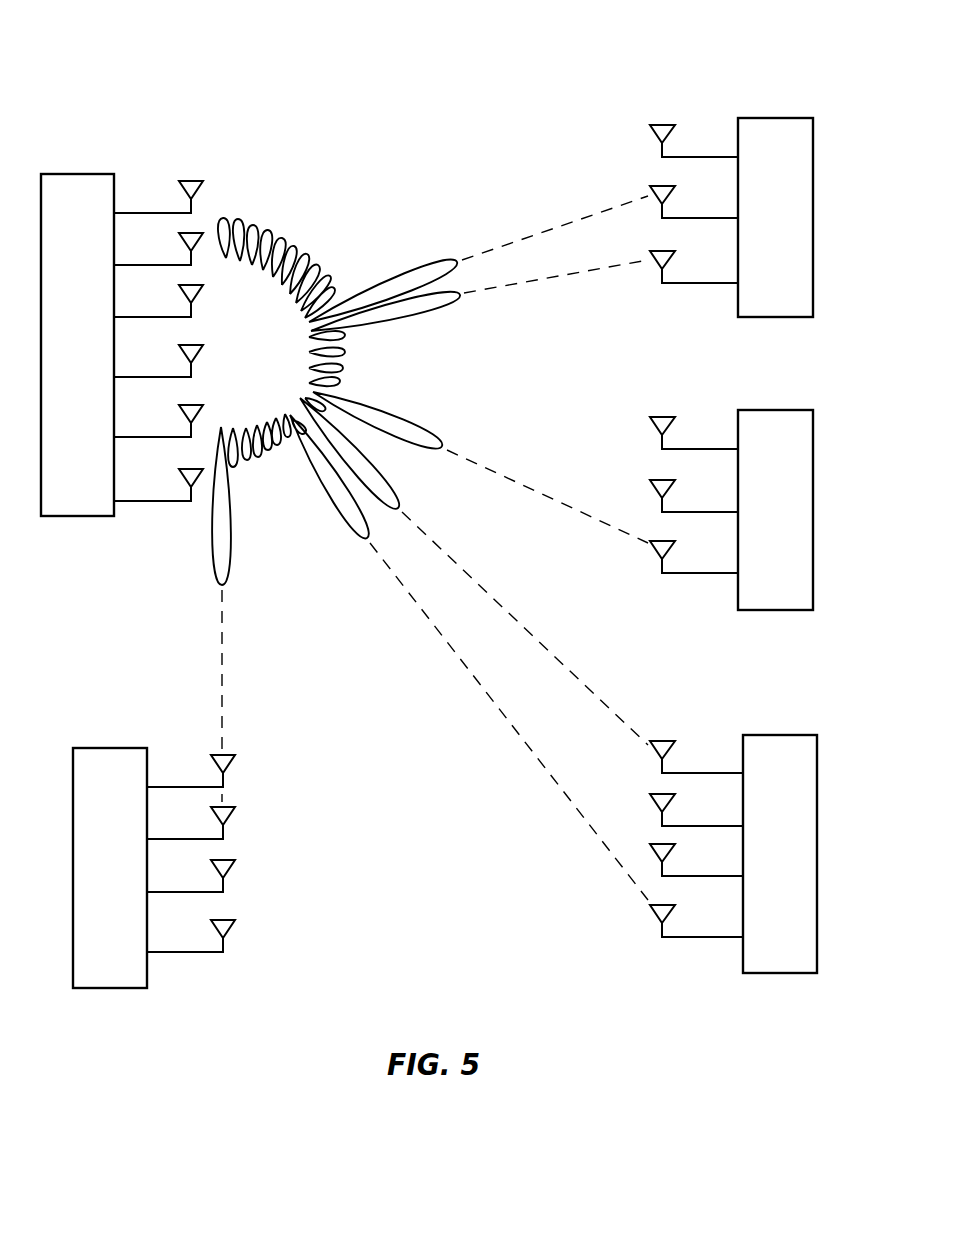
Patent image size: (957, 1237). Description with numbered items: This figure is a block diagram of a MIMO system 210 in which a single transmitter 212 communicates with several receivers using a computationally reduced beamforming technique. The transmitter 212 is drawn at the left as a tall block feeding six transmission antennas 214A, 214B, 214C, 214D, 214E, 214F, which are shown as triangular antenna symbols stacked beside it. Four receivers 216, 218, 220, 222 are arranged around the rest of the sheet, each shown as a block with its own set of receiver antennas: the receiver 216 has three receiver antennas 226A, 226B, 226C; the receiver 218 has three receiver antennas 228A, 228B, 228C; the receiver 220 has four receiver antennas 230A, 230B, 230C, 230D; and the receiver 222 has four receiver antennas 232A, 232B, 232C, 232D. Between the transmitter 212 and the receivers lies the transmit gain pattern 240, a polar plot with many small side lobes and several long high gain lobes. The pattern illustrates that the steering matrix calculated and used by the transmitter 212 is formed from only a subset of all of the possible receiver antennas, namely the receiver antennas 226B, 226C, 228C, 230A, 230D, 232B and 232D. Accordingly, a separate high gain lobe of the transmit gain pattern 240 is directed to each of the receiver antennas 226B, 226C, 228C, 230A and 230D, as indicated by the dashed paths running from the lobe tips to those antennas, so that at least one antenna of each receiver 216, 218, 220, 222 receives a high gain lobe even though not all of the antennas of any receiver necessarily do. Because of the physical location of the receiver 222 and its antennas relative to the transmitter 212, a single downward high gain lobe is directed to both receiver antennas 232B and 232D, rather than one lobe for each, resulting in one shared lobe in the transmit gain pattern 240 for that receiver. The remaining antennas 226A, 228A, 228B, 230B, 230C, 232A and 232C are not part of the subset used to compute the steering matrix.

The MIMO system 210 is at (227, 60).
The transmitter 212 is at (97, 173).
The transmission antenna 214A is at (181, 185).
The transmission antenna 214B is at (181, 237).
The transmission antenna 214C is at (181, 289).
The transmission antenna 214D is at (181, 349).
The transmission antenna 214E is at (181, 409).
The transmission antenna 214F is at (181, 473).
The receiver 216 is at (763, 118).
The receiver 218 is at (763, 410).
The receiver 220 is at (765, 735).
The receiver 222 is at (130, 748).
The receiver antenna 226A is at (675, 127).
The receiver antenna 226B is at (675, 188).
The receiver antenna 226C is at (675, 253).
The receiver antenna 228A is at (675, 419).
The receiver antenna 228B is at (675, 482).
The receiver antenna 228C is at (675, 543).
The receiver antenna 230A is at (675, 743).
The receiver antenna 230B is at (675, 796).
The receiver antenna 230C is at (675, 846).
The receiver antenna 230D is at (675, 907).
The receiver antenna 232A is at (213, 758).
The receiver antenna 232B is at (213, 810).
The receiver antenna 232C is at (213, 863).
The receiver antenna 232D is at (213, 923).
The transmit gain pattern 240 is at (277, 228).